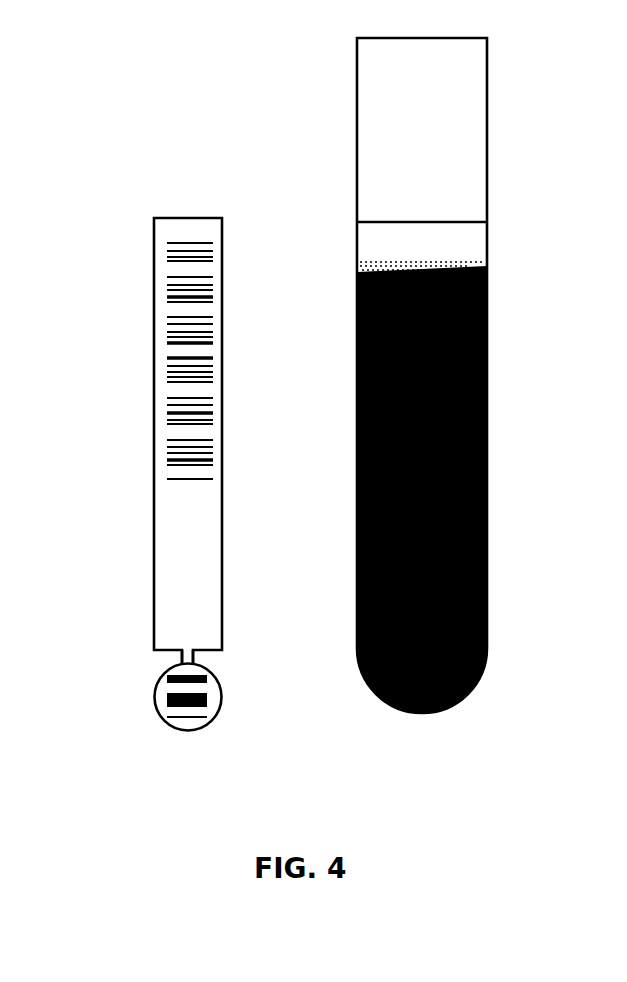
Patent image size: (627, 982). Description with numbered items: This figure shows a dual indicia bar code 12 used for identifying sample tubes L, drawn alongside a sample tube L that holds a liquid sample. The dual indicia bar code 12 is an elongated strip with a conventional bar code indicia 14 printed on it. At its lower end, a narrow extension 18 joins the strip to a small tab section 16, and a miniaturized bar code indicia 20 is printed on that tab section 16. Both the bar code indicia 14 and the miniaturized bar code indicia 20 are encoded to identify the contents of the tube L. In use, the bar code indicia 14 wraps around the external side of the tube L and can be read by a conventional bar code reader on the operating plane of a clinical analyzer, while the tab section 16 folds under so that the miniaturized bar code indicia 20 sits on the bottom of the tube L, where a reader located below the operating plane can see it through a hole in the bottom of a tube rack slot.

The dual indicia bar code 12 is at (153, 393).
The conventional bar code indicia 14 is at (223, 323).
The tab section 16 is at (155, 695).
The narrow extension 18 is at (181, 657).
The miniaturized bar code indicia 20 is at (221, 699).
The sample tube L is at (487, 481).